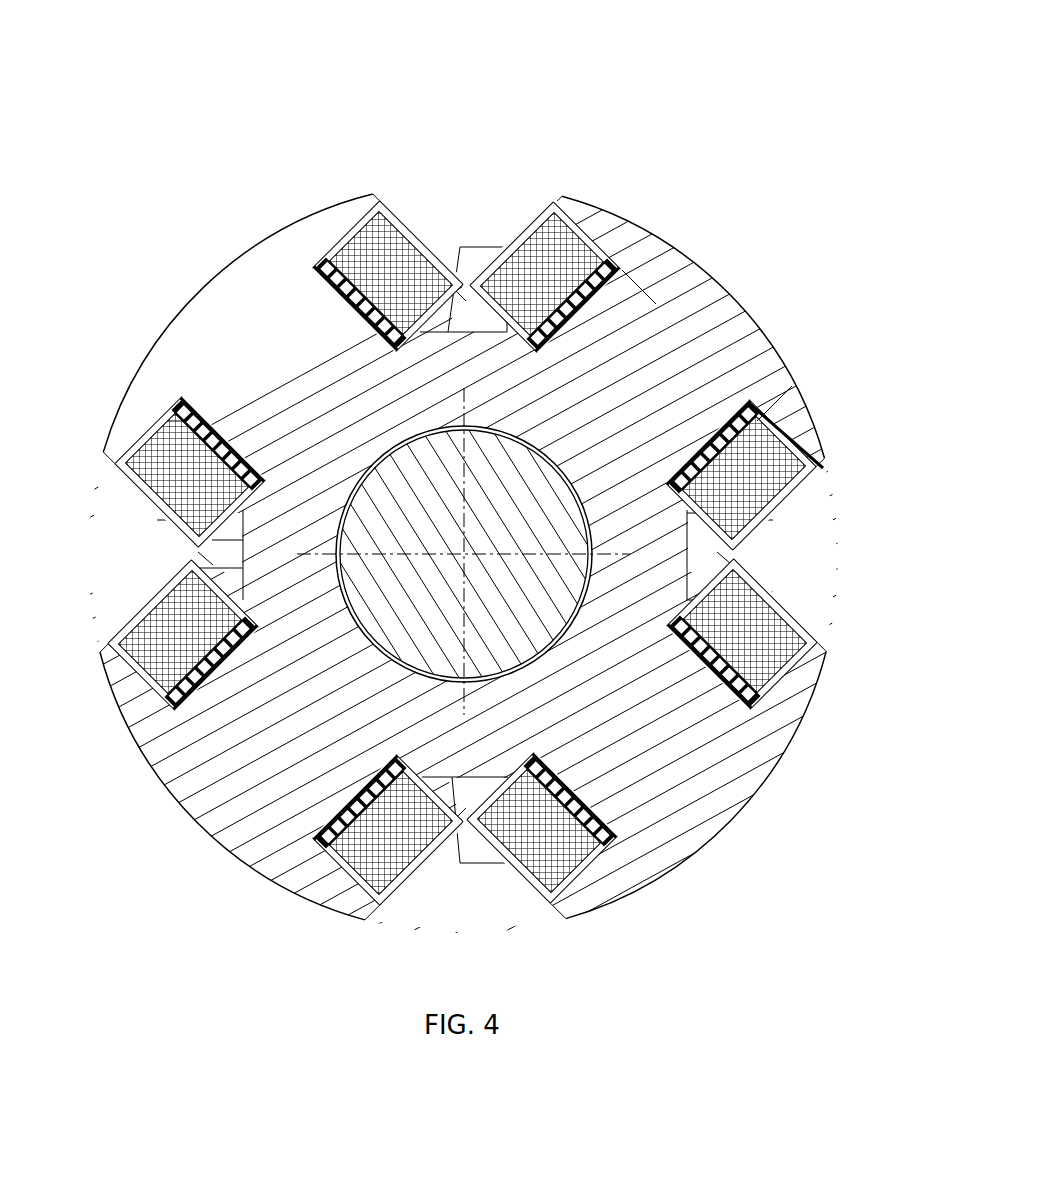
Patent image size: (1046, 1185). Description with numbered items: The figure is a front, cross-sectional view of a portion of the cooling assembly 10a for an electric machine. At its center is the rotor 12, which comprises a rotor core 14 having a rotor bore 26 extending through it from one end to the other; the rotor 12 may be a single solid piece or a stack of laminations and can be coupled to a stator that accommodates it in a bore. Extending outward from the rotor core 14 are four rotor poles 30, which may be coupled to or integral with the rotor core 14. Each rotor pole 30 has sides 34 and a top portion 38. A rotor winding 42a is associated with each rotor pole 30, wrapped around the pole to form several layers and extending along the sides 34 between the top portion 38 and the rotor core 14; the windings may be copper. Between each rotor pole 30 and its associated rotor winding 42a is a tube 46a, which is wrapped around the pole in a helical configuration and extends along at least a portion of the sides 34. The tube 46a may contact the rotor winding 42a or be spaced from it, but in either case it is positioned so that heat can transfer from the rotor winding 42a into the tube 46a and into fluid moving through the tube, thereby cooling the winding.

The cooling assembly 10a is at (462, 595).
The rotor 12 is at (462, 630).
The rotor core 14 is at (632, 553).
The rotor bore 26 is at (350, 548).
The rotor poles 30 is at (709, 271).
The sides 34 is at (622, 270).
The top portion 38 is at (825, 466).
The rotor windings 42a is at (507, 247).
The tube 46a is at (342, 274).